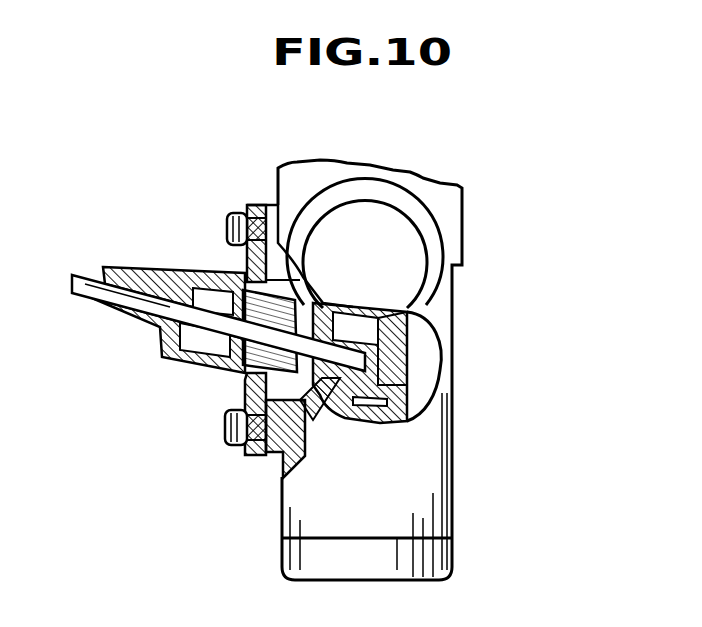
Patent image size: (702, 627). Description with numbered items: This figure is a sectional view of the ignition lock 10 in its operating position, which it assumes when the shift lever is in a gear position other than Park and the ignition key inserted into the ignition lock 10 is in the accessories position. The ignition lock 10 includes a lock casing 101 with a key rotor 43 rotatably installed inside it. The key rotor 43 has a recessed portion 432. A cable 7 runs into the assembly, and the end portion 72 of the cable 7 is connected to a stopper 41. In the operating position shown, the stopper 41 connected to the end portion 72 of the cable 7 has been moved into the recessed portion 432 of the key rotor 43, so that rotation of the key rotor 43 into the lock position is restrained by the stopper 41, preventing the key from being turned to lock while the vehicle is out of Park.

The ignition lock 10 is at (453, 527).
The lock casing 101 is at (423, 455).
The cable 7 is at (90, 290).
The end portion of the cable 72 is at (197, 363).
The stopper 41 is at (317, 377).
The key rotor 43 is at (413, 360).
The recessed portion 432 is at (400, 375).